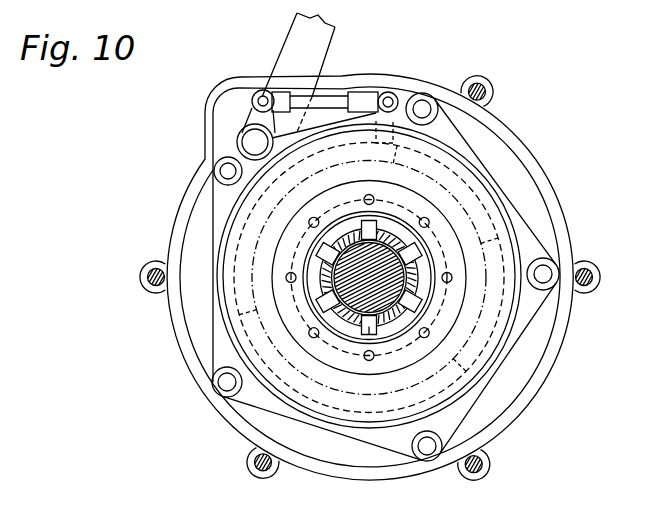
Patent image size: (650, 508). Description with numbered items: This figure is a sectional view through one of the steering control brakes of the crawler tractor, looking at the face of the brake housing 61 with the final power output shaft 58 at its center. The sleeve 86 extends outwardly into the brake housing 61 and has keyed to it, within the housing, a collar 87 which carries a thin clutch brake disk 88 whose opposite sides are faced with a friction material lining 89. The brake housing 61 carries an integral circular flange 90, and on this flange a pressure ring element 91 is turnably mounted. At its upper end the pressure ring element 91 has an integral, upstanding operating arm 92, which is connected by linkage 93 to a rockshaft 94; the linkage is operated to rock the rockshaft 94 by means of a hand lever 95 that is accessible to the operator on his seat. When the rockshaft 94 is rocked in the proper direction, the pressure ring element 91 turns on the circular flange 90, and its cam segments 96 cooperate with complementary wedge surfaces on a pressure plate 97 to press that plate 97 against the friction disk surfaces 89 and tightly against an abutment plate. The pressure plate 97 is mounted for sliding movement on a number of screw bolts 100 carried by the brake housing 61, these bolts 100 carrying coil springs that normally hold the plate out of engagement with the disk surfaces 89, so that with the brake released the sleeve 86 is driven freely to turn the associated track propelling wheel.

The final power output shaft 58 is at (374, 252).
The brake housing 61 is at (549, 342).
The sleeve 86 is at (382, 326).
The collar 87 is at (360, 338).
The clutch brake disk 88 is at (283, 278).
The friction material lining 89 is at (500, 341).
The circular flange 90 is at (386, 322).
The pressure ring element 91 is at (489, 384).
The operating arm 92 is at (402, 97).
The linkage 93 is at (326, 95).
The rockshaft 94 is at (248, 138).
The hand lever 95 is at (338, 23).
The cam segments 96 is at (483, 168).
The pressure plate 97 is at (515, 222).
The screw bolts 100 is at (226, 167).